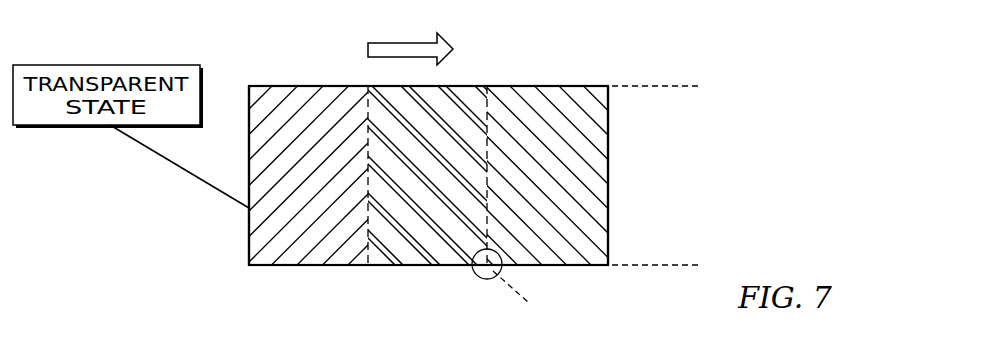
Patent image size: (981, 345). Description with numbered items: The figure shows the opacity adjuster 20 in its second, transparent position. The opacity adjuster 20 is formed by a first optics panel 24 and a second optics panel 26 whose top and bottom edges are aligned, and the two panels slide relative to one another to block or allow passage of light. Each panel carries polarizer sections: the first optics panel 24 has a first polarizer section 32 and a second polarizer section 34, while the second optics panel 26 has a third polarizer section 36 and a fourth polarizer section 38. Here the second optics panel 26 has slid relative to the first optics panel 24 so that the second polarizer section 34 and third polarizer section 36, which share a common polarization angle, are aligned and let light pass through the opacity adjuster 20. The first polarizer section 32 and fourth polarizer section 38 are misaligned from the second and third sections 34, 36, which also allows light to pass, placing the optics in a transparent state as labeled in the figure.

The opacity adjuster 20 is at (280, 40).
The first optics panel 24 is at (244, 104).
The second optics panel 26 is at (613, 102).
The first polarizer section 32 is at (287, 114).
The second polarizer section 34 is at (444, 133).
The third polarizer section 36 is at (386, 250).
The fourth polarizer section 38 is at (545, 108).